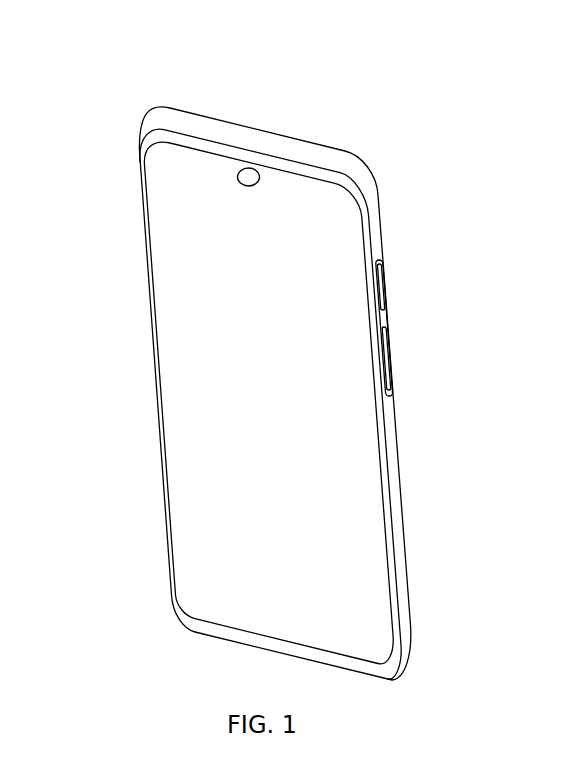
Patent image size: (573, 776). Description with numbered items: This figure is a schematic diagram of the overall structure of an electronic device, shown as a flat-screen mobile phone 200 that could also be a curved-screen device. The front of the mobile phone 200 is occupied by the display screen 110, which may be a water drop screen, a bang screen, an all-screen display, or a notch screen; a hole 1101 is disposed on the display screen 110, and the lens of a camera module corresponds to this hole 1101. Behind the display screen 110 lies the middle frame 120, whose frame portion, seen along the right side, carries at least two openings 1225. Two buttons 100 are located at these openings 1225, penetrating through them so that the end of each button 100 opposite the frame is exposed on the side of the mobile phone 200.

The mobile phone 200 is at (125, 57).
The hole 1101 is at (247, 172).
The button 100 is at (387, 292).
The opening 1225 is at (388, 343).
The middle frame 120 is at (388, 455).
The display screen 110 is at (377, 548).